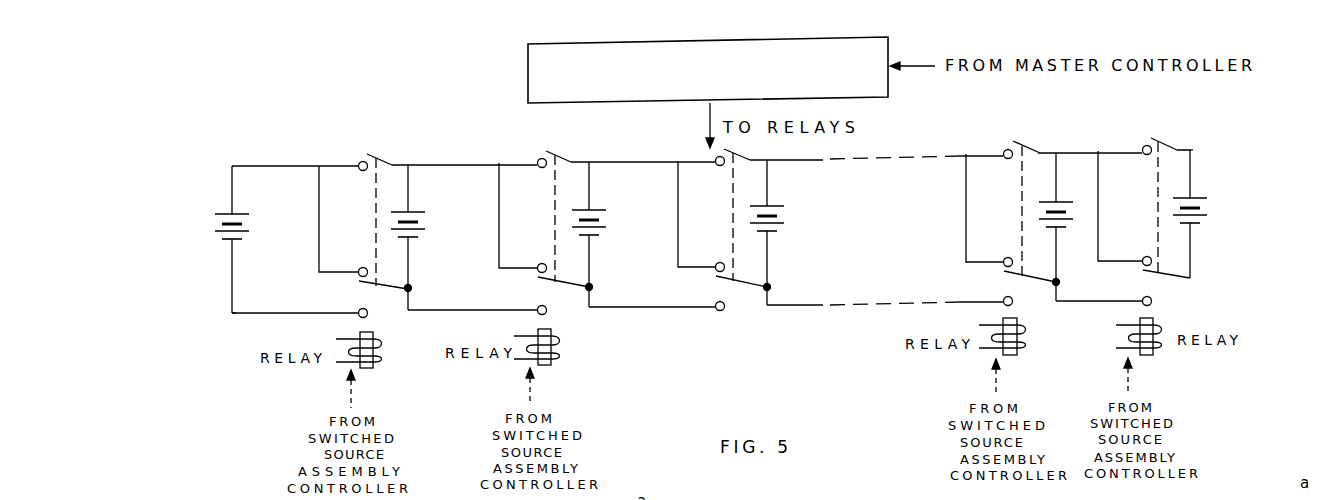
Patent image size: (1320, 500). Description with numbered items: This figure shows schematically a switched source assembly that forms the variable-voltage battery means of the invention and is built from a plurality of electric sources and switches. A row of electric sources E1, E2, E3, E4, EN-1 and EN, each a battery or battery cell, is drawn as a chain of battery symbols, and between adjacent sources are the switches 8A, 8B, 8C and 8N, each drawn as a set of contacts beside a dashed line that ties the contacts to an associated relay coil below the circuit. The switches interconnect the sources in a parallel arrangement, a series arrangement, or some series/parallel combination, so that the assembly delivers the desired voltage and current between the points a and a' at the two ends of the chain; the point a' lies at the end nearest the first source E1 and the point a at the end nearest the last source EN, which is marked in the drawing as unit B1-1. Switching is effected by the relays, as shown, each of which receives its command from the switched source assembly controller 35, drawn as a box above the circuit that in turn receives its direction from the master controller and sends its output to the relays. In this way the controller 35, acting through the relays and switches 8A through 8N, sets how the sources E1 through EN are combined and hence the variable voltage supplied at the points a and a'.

The switched source assembly controller 35 is at (528, 62).
The switch 8A is at (382, 293).
The switch 8B is at (557, 290).
The switch 8C is at (733, 288).
The switch 8N is at (1162, 282).
The electric source E1 is at (221, 214).
The electric source E2 is at (418, 211).
The electric source E3 is at (598, 212).
The electric source E4 is at (782, 205).
The electric source EN-1 is at (1044, 200).
The electric source EN is at (1199, 198).
The switched source assembly B1-1 is at (1168, 203).
The point a is at (1212, 143).
The point a' is at (229, 332).